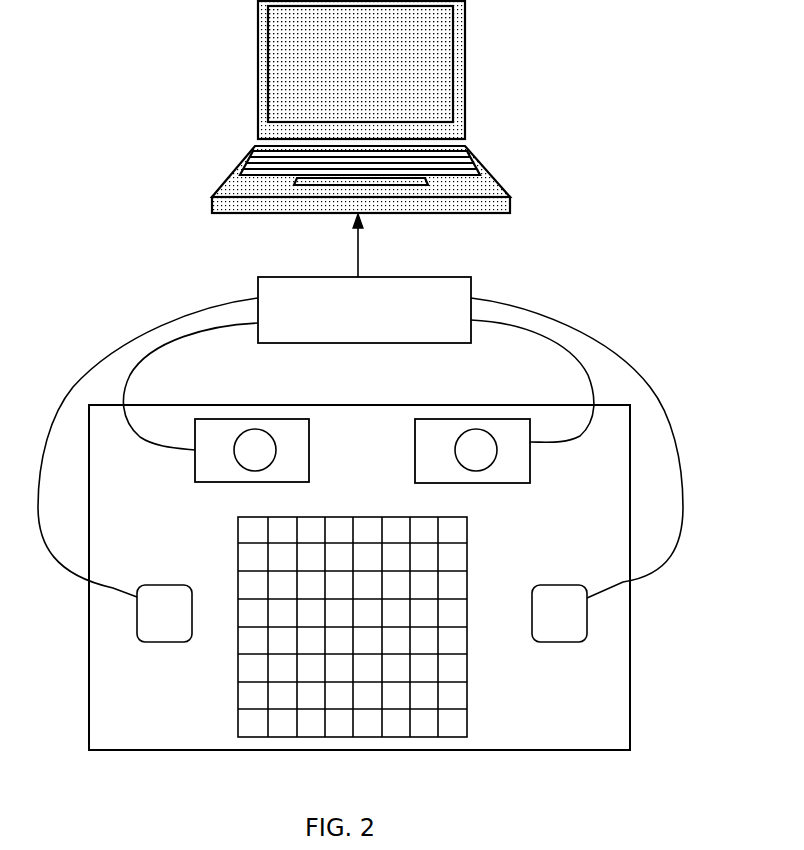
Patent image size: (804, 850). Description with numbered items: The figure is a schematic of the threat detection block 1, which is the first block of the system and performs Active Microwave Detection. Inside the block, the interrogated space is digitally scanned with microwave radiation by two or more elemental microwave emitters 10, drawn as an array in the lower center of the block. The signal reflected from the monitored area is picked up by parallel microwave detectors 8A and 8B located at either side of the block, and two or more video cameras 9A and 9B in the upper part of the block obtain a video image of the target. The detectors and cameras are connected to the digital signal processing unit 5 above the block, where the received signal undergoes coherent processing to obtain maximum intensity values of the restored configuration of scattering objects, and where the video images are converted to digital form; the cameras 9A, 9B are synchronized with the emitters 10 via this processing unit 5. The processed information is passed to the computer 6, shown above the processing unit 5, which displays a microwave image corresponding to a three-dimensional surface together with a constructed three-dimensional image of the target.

The computer 6 is at (361, 107).
The digital signal processing unit 5 is at (364, 310).
The threat detection block 1 is at (359, 577).
The video camera 9A is at (252, 450).
The video camera 9B is at (472, 451).
The microwave detector 8A is at (164, 613).
The microwave detector 8B is at (559, 613).
The elemental microwave emitters 10 is at (335, 627).